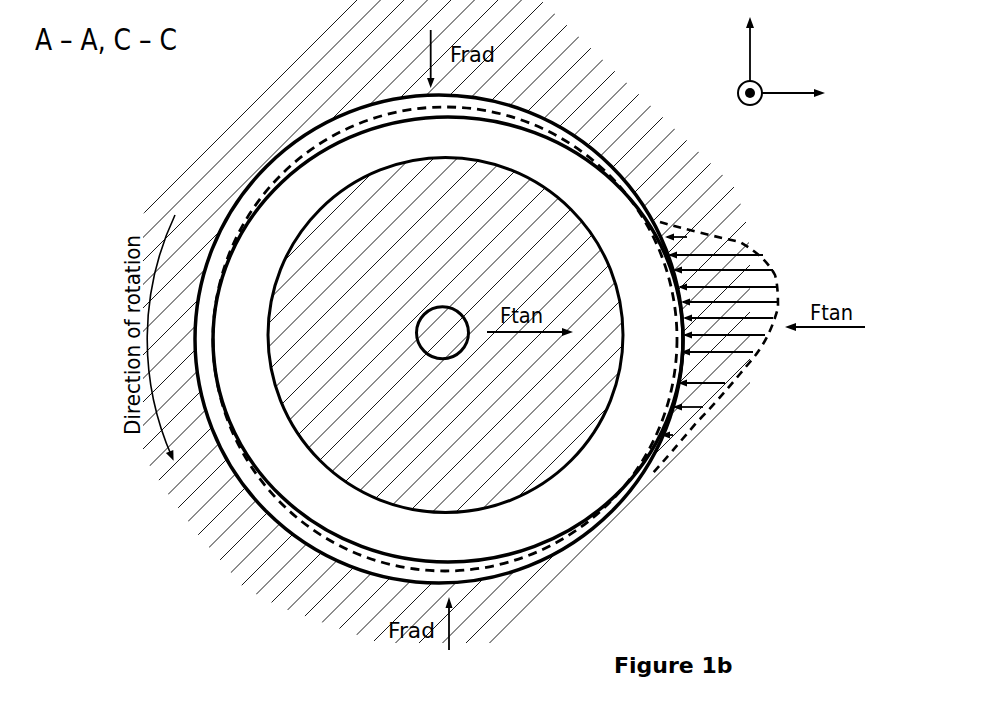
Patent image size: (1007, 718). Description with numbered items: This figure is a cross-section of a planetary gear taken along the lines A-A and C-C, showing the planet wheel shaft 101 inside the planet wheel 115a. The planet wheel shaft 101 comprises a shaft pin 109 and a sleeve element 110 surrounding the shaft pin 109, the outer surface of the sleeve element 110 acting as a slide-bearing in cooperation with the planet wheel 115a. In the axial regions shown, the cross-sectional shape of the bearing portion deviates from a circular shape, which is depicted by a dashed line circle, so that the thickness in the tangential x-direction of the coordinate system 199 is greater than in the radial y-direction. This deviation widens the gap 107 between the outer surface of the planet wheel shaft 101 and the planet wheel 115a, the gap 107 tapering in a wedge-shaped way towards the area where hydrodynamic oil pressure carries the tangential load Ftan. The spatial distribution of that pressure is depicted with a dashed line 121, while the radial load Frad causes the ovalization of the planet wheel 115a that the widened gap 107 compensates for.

The planet wheel shaft 101 is at (268, 366).
The gap 107 is at (532, 558).
The shaft pin 109 is at (393, 424).
The sleeve element 110 is at (348, 168).
The planet wheel 115a is at (287, 116).
The dashed line depicting hydrodynamic oil pressure distribution 121 is at (777, 275).
The coordinate system 199 is at (811, 66).